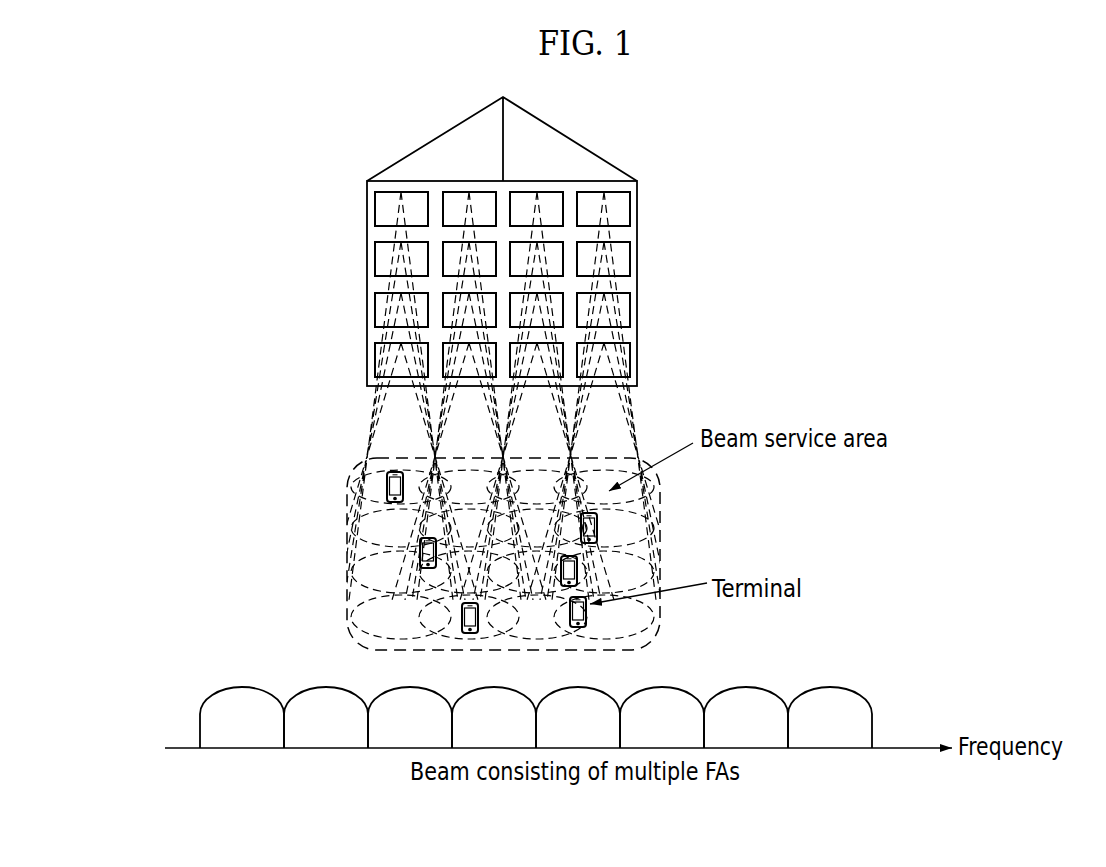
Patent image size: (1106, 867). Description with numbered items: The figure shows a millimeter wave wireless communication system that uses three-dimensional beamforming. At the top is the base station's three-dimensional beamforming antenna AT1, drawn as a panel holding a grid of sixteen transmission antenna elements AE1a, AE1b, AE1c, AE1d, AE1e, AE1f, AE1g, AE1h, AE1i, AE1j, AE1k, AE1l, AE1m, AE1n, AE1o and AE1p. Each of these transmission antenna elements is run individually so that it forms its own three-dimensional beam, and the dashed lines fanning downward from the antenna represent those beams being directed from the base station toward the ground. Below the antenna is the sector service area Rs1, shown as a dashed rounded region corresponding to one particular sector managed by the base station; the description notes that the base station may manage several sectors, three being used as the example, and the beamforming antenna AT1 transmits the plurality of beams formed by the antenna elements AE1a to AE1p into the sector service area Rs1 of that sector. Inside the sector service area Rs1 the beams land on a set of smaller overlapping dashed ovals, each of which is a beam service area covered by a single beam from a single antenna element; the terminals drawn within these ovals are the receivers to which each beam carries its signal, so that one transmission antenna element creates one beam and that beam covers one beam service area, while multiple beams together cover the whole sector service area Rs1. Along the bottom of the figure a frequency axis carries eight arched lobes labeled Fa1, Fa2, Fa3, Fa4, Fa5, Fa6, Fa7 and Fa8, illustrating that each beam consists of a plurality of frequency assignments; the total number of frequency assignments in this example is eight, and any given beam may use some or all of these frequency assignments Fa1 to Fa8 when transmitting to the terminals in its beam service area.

The 3-dimensional beamforming antenna AT1 is at (682, 241).
The sector service area Rs1 is at (346, 552).
The transmission antenna element AE1a is at (401, 209).
The transmission antenna element AE1b is at (469, 209).
The transmission antenna element AE1c is at (536, 209).
The transmission antenna element AE1d is at (603, 209).
The transmission antenna element AE1e is at (401, 259).
The transmission antenna element AE1f is at (469, 259).
The transmission antenna element AE1g is at (536, 259).
The transmission antenna element AE1h is at (603, 259).
The transmission antenna element AE1i is at (401, 310).
The transmission antenna element AE1j is at (469, 310).
The transmission antenna element AE1k is at (536, 310).
The transmission antenna element AE1l is at (603, 310).
The transmission antenna element AE1m is at (401, 360).
The transmission antenna element AE1n is at (469, 360).
The transmission antenna element AE1o is at (536, 360).
The transmission antenna element AE1p is at (603, 360).
The frequency assignment Fa1 is at (242, 717).
The frequency assignment Fa2 is at (326, 717).
The frequency assignment Fa3 is at (410, 717).
The frequency assignment Fa4 is at (494, 717).
The frequency assignment Fa5 is at (578, 717).
The frequency assignment Fa6 is at (662, 717).
The frequency assignment Fa7 is at (746, 717).
The frequency assignment Fa8 is at (830, 717).